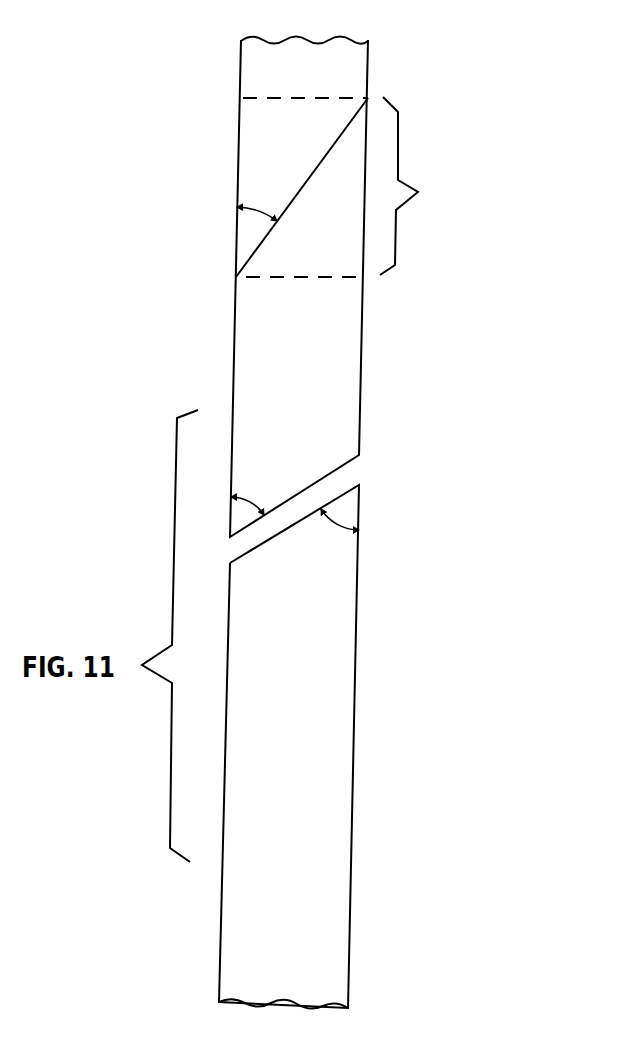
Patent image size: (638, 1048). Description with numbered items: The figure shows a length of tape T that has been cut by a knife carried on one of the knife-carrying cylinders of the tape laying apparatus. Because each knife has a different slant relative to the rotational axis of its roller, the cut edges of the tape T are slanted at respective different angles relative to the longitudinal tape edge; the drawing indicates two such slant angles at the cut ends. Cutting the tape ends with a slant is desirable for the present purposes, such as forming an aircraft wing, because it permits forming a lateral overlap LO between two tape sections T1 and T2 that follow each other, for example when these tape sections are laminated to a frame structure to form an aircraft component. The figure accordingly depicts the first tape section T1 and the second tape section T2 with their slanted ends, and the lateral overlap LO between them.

The tape T is at (338, 820).
The first tape section T1 is at (348, 357).
The second tape section T2 is at (355, 58).
The lateral overlap LO is at (428, 186).